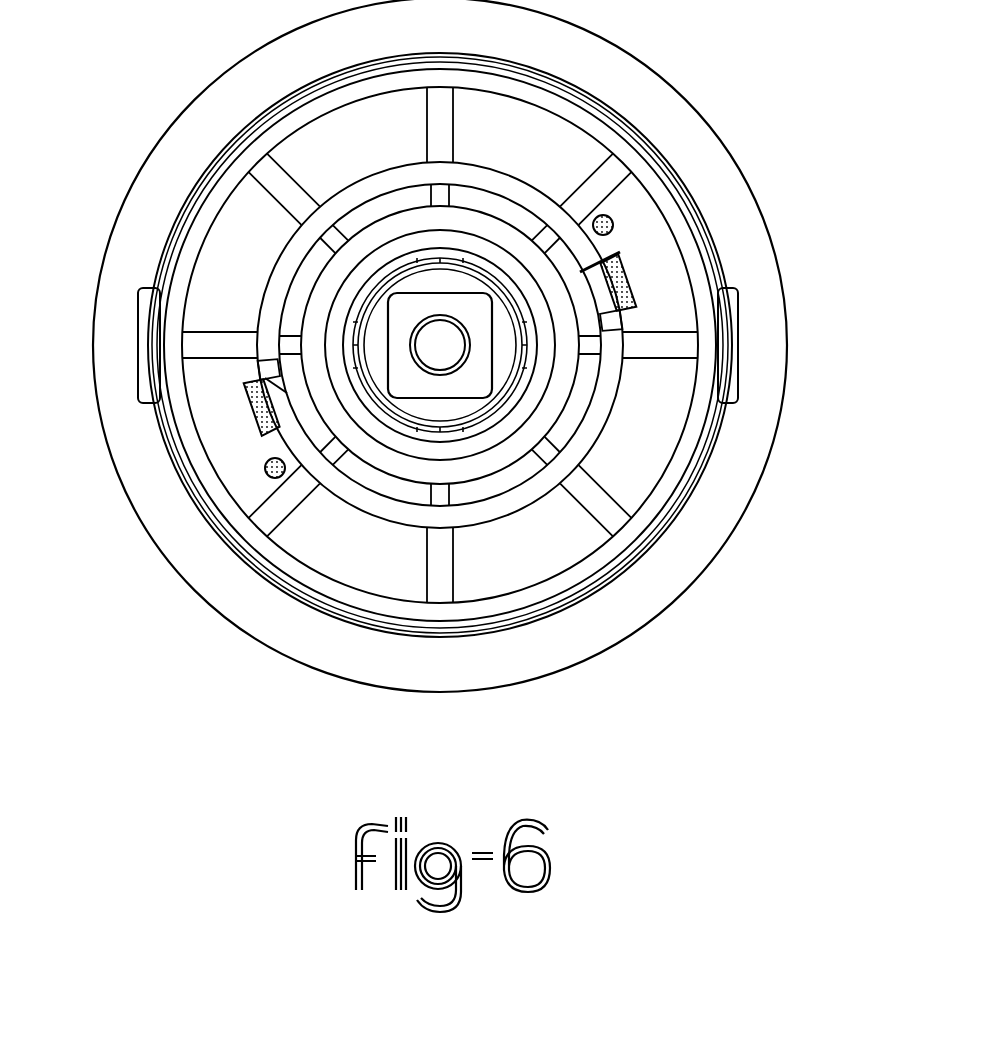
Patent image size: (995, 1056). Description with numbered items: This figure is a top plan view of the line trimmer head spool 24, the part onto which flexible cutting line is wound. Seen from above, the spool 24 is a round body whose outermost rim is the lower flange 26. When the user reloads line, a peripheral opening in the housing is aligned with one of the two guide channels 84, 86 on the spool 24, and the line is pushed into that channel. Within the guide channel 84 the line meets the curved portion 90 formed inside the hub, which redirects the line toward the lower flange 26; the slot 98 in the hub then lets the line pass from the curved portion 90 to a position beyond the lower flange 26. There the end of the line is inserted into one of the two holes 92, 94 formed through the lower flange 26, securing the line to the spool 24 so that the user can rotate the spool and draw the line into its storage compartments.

The spool 24 is at (703, 612).
The lower flange 26 is at (665, 445).
The guide channel 84 is at (622, 255).
The guide channel 86 is at (252, 415).
The curved portion 90 is at (620, 266).
The hole 92 is at (614, 223).
The hole 94 is at (266, 476).
The slot 98 is at (640, 300).